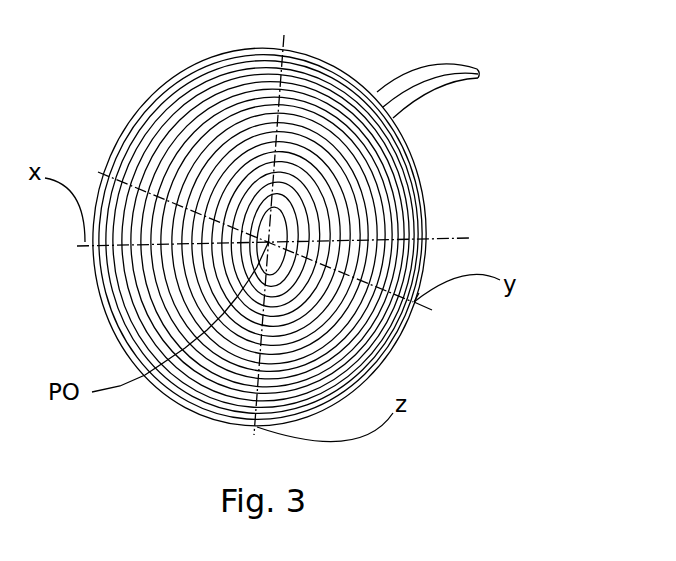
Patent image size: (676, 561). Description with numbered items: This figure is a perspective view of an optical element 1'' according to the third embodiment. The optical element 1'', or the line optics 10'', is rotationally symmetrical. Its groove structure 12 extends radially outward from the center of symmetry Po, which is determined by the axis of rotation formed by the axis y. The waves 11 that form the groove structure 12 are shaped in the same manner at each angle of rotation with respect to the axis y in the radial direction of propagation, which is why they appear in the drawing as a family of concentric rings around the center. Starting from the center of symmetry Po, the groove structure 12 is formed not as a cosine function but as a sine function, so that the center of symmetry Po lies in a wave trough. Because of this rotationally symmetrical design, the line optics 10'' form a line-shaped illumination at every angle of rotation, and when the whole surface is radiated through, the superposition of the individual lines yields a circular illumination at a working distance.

The optical element 1'' is at (322, 219).
The line optics 10'' is at (322, 237).
The waves 11 is at (444, 91).
The groove structure 12 is at (387, 190).